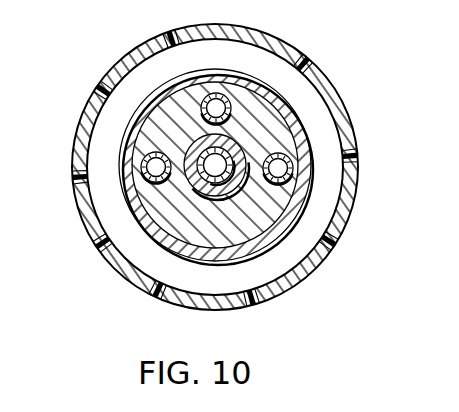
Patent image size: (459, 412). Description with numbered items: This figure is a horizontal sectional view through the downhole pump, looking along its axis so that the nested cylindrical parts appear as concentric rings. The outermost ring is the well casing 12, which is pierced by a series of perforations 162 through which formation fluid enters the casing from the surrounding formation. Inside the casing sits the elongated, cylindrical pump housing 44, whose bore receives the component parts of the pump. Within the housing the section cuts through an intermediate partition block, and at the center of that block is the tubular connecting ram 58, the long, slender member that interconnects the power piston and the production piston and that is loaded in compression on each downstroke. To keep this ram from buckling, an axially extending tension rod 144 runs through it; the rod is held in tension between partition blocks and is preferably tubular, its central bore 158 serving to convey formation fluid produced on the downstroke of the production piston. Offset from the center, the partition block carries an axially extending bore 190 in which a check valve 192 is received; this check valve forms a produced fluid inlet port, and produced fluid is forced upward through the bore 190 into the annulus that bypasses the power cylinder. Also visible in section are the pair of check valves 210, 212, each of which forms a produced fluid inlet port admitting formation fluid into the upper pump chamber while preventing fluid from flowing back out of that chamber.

The well casing 12 is at (349, 108).
The pump housing 44 is at (298, 221).
The tubular connecting ram 58 is at (290, 111).
The tension rod 144 is at (146, 239).
The bore 158 is at (172, 257).
The perforations 162 is at (171, 34).
The bore 190 is at (232, 86).
The check valve 192 is at (226, 93).
The check valve 210 is at (141, 162).
The check valve 212 is at (290, 167).